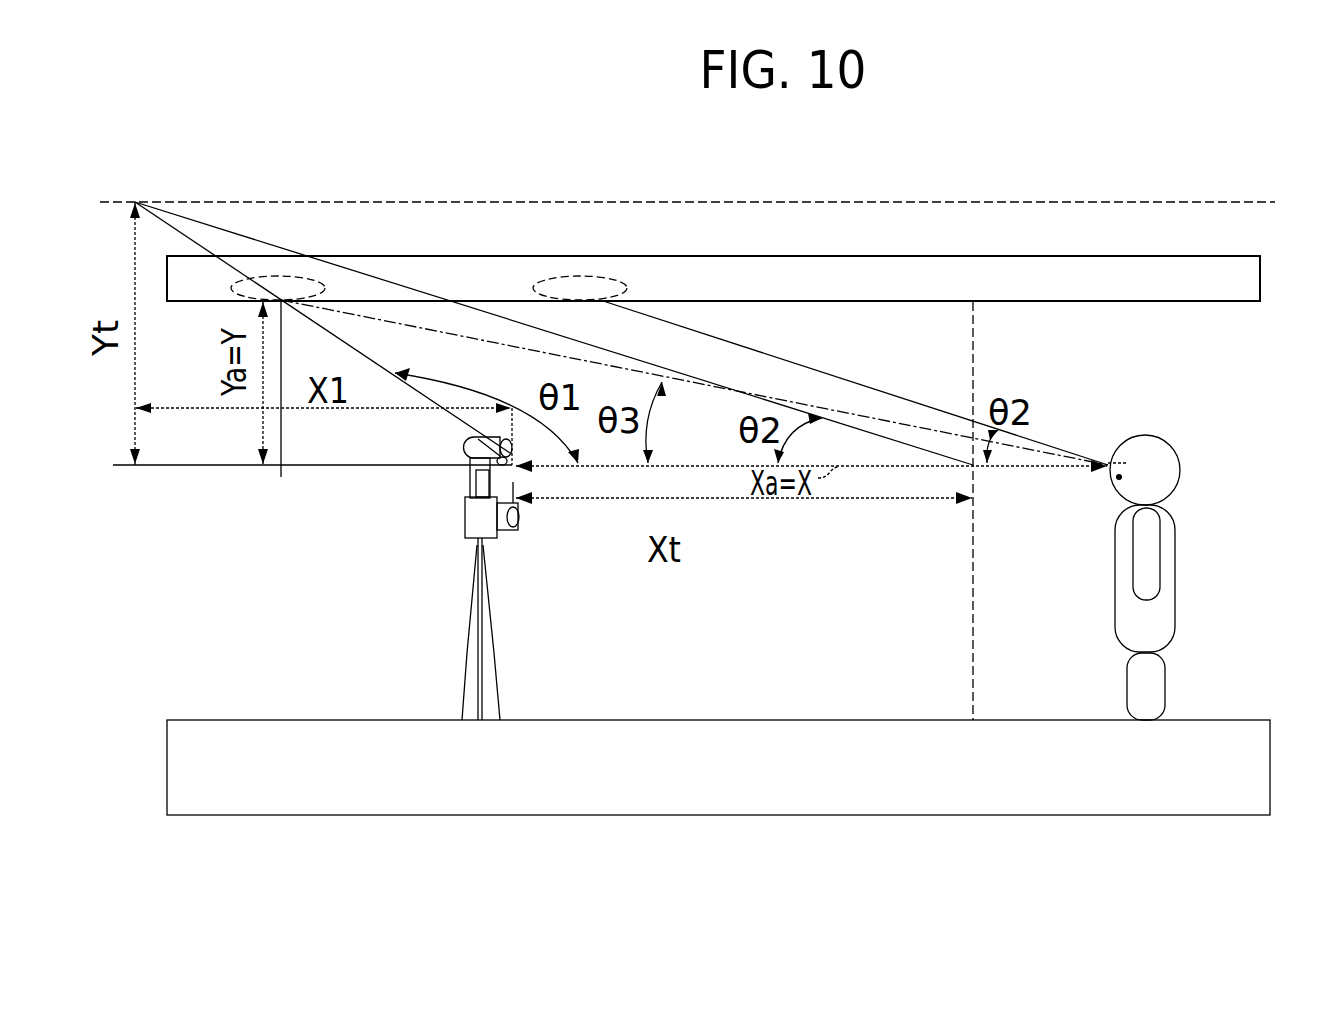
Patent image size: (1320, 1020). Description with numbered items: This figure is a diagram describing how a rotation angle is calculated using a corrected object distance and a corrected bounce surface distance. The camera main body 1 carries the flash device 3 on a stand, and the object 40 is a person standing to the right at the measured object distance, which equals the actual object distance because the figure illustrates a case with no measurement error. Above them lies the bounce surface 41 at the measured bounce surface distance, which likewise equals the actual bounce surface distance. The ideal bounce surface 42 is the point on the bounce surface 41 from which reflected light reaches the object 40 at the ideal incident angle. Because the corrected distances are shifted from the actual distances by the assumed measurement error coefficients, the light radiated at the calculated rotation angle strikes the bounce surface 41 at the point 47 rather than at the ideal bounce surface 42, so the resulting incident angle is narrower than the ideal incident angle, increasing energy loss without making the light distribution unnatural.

The camera main body 1 is at (465, 522).
The flash device 3 is at (468, 478).
The object 40 is at (1147, 435).
The bounce surface 41 is at (856, 257).
The ideal bounce surface 42 is at (588, 278).
The reflection point 47 is at (300, 278).